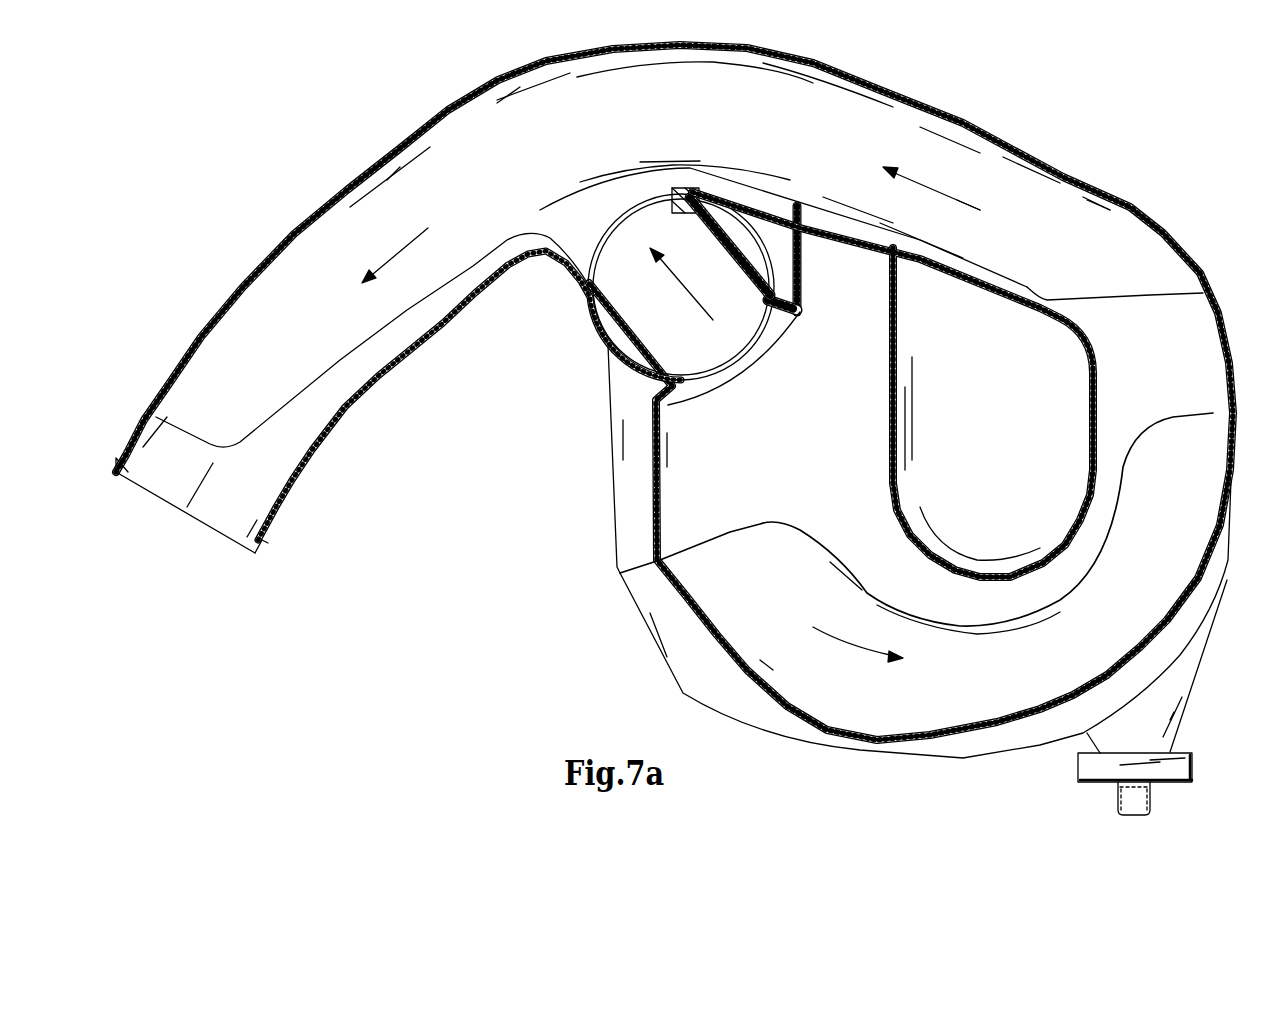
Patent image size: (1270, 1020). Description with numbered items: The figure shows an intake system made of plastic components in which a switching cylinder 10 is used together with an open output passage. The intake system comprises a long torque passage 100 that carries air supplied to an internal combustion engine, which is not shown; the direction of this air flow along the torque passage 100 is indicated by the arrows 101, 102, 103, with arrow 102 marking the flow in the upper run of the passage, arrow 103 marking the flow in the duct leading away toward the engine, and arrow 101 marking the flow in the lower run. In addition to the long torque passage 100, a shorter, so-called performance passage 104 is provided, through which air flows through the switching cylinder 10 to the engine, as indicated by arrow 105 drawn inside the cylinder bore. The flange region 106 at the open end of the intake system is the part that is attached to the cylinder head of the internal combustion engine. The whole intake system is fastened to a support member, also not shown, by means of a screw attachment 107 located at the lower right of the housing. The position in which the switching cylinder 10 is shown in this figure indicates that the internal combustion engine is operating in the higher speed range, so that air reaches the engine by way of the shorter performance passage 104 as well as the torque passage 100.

The switching cylinder 10 is at (647, 223).
The torque passage 100 is at (1057, 200).
The arrow 101 is at (863, 652).
The arrow 102 is at (960, 197).
The arrow 103 is at (400, 253).
The performance passage 104 is at (758, 312).
The arrow 105 is at (688, 295).
The flange region 106 is at (263, 552).
The screw attachment 107 is at (1128, 799).